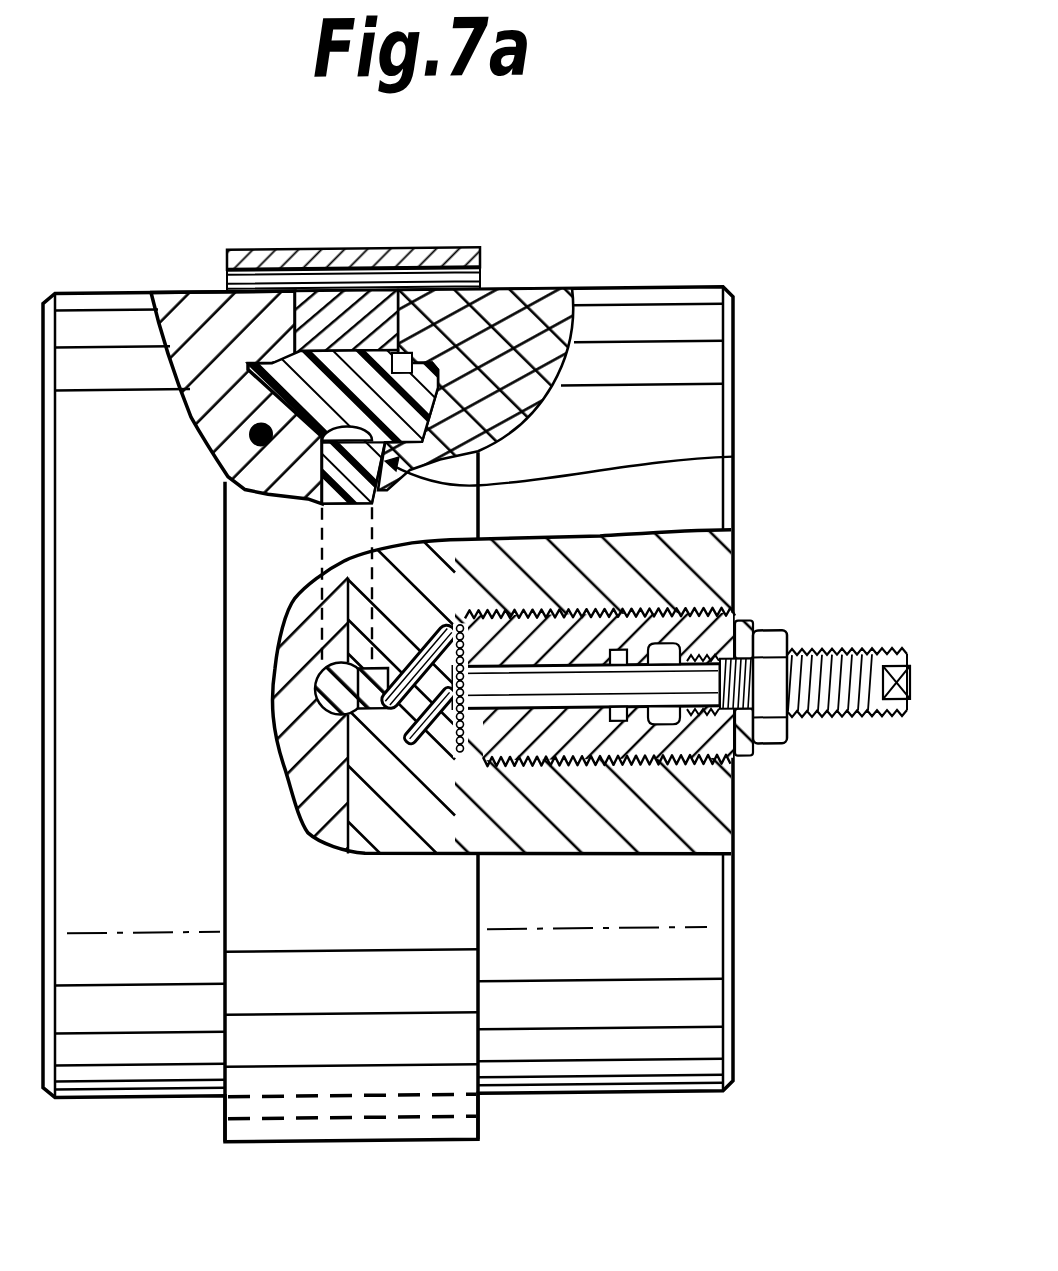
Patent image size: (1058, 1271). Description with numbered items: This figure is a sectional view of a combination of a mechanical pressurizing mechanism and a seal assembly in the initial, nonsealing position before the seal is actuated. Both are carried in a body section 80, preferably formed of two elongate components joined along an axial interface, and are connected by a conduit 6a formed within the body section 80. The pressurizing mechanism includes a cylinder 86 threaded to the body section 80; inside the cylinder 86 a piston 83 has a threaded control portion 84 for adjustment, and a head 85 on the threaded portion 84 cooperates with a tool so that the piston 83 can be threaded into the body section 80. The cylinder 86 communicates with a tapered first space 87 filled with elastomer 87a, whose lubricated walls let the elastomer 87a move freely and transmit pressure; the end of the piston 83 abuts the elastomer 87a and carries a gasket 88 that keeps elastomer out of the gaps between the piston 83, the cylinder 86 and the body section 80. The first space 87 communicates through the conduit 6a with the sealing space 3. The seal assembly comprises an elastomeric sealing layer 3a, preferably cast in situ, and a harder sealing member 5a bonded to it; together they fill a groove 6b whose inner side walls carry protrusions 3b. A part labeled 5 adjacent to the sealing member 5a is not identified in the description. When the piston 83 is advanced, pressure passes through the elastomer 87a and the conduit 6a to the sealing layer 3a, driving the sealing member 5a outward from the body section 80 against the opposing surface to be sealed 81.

The sealing space 3 is at (407, 401).
The elastomeric sealing layer 3a is at (410, 358).
The protrusions 3b is at (415, 380).
The cover 5 is at (243, 283).
The sealing member 5a is at (367, 318).
The conduit 6a is at (320, 525).
The groove 6b is at (733, 460).
The body section 80 is at (690, 370).
The opposing surface to be sealed 81 is at (311, 257).
The piston 83 is at (633, 695).
The threaded control portion 84 is at (850, 657).
The head 85 is at (899, 721).
The cylinder 86 is at (720, 640).
The tapered first space 87 is at (410, 745).
The elastomer 87a is at (388, 714).
The gasket 88 is at (468, 722).